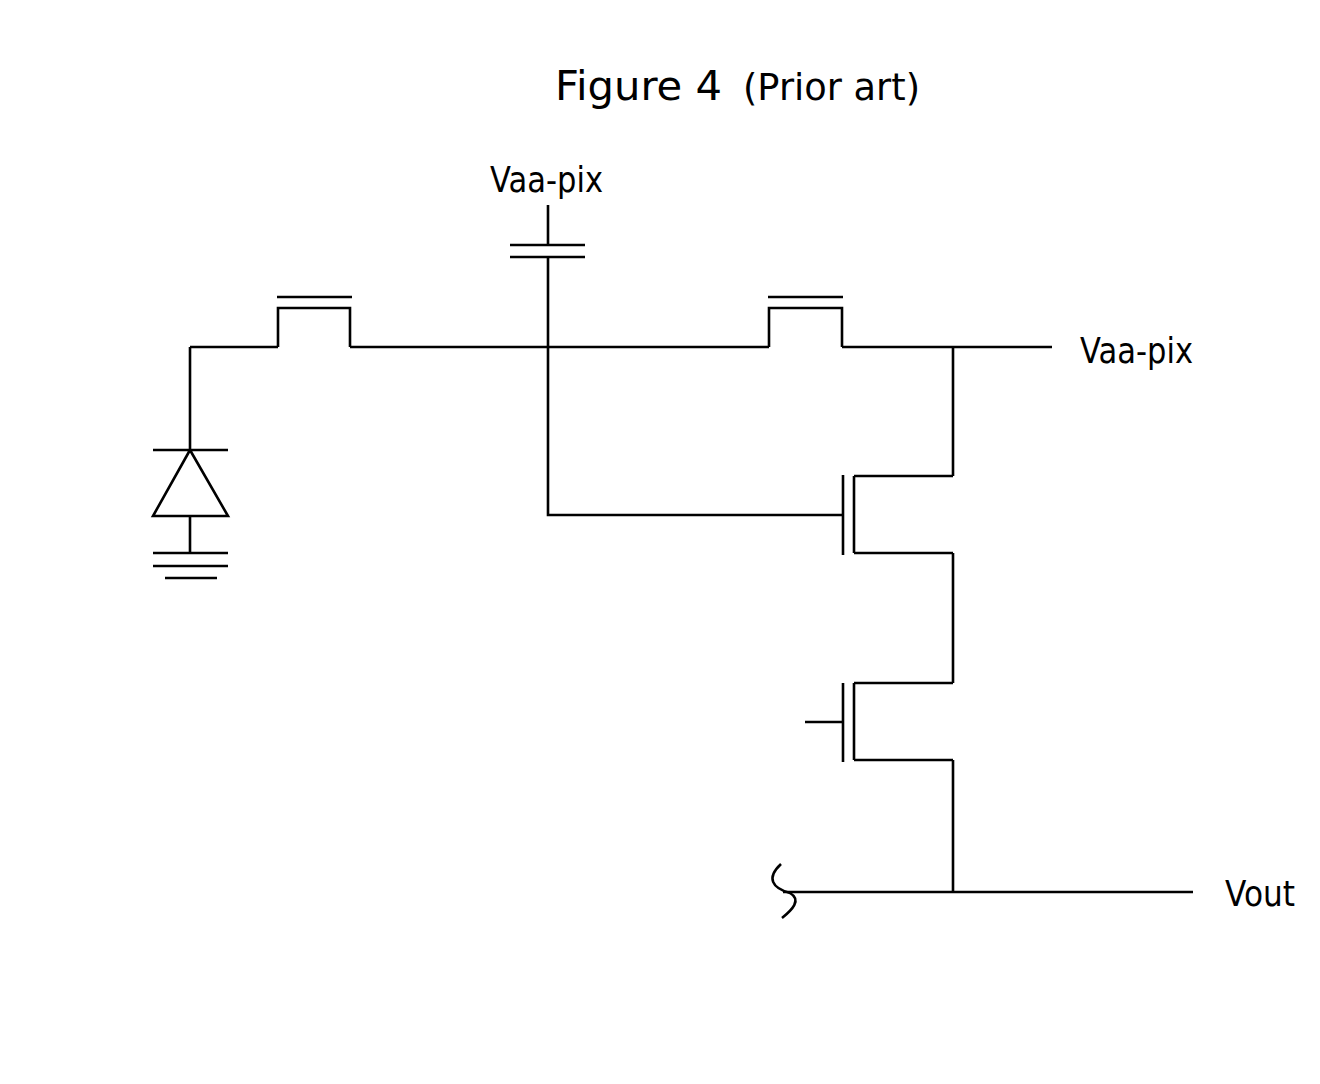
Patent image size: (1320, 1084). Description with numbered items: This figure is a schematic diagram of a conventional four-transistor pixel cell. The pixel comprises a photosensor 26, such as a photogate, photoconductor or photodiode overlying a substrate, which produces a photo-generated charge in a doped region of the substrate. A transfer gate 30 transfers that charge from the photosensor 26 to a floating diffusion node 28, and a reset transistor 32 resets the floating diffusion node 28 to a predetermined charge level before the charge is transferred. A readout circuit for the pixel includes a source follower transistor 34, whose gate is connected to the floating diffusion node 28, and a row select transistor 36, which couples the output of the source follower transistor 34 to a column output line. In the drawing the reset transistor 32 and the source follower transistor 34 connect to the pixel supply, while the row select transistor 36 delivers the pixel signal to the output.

The photosensor 26 is at (157, 514).
The floating diffusion node 28 is at (659, 431).
The transfer gate 30 is at (313, 297).
The reset transistor 32 is at (805, 297).
The source follower transistor 34 is at (865, 509).
The row select transistor 36 is at (850, 722).